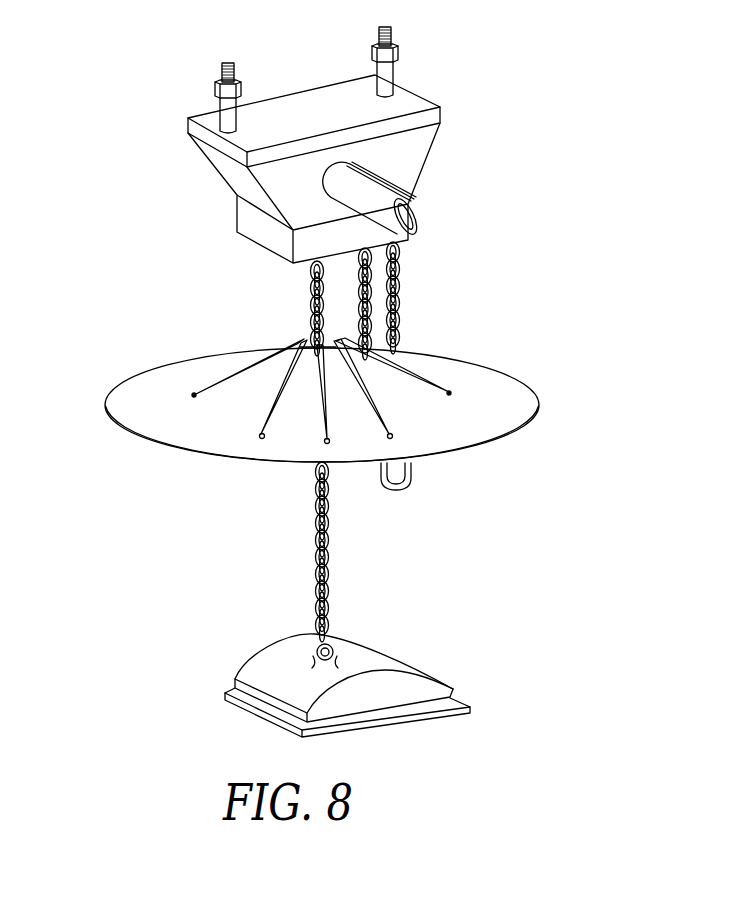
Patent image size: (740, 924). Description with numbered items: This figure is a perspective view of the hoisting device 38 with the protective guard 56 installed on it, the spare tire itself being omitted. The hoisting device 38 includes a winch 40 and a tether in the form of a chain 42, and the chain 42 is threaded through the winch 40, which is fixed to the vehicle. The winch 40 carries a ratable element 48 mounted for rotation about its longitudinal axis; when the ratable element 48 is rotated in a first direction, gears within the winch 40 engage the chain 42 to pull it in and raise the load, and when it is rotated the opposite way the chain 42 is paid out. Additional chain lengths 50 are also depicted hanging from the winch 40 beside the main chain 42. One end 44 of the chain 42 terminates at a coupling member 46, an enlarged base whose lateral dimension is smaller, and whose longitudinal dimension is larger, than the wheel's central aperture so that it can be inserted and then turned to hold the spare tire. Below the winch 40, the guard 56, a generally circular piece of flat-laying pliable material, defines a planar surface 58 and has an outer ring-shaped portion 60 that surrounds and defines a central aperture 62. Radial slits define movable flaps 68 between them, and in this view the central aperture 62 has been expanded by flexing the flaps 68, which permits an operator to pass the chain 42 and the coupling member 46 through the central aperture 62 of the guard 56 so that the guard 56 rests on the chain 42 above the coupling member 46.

The hoisting device 38 is at (170, 118).
The winch 40 is at (219, 170).
The chain 42 is at (308, 283).
The end of chain 44 is at (312, 653).
The coupling member 46 is at (378, 653).
The ratable element 48 is at (420, 218).
The side chains 50 is at (401, 279).
The guard 56 is at (546, 407).
The planar surface 58 is at (493, 415).
The ring-shaped portion 60 is at (130, 397).
The central aperture 62 is at (303, 338).
The flaps 68 is at (243, 402).